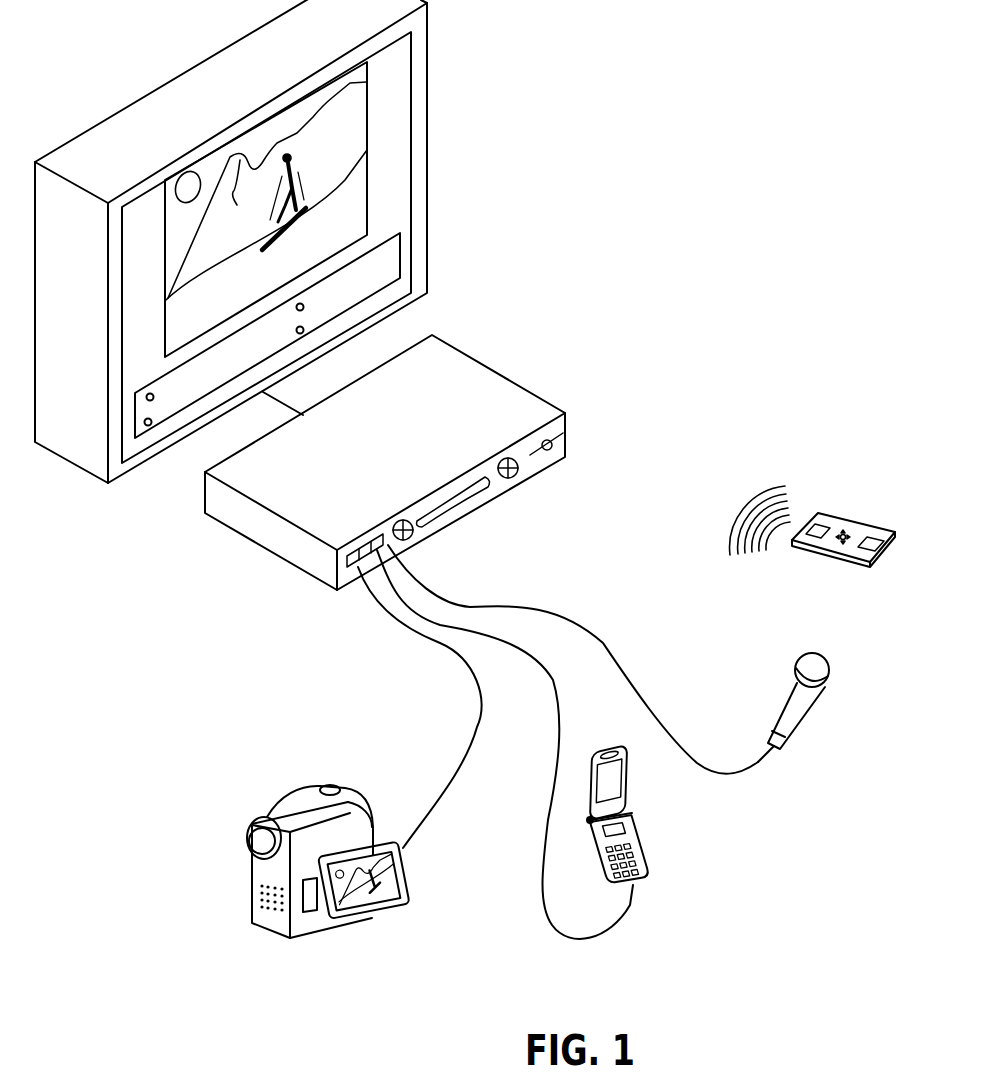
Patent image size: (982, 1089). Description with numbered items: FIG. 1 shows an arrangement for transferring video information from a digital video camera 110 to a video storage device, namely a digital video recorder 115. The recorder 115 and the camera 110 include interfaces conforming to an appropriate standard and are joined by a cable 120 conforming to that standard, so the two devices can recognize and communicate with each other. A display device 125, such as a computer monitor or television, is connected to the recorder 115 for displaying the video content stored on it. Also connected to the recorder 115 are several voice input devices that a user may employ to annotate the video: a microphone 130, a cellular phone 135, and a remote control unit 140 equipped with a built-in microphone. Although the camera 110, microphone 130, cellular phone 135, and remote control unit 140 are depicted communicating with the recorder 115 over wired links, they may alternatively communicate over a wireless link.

The digital video camera 110 is at (270, 922).
The digital video recorder 115 is at (493, 397).
The cable 120 is at (391, 630).
The display device 125 is at (393, 165).
The microphone 130 is at (803, 712).
The cellular phone 135 is at (637, 826).
The remote control unit 140 is at (857, 528).